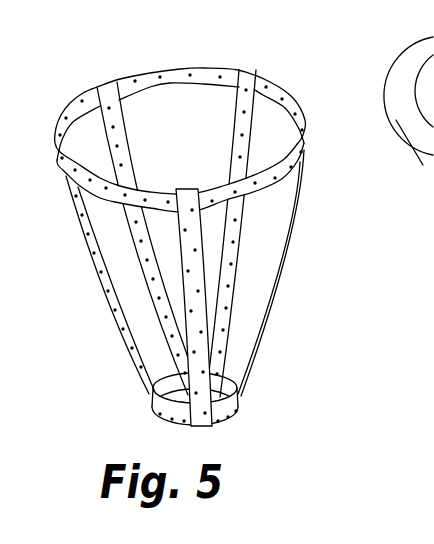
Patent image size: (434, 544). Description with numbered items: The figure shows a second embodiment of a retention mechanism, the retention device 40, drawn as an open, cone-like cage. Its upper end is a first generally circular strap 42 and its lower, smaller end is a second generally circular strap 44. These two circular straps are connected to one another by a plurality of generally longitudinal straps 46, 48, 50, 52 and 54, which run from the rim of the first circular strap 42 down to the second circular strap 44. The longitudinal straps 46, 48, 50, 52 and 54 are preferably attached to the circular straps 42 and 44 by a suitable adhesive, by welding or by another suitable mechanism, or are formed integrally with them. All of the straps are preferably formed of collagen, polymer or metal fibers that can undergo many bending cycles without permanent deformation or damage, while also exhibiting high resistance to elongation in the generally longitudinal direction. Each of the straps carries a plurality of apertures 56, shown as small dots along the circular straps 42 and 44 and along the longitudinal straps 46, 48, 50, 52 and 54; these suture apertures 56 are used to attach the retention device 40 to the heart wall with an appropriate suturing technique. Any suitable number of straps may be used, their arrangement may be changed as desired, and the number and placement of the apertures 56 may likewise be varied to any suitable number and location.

The retention device 40 is at (204, 232).
The first generally circular strap 42 is at (282, 94).
The second generally circular strap 44 is at (223, 422).
The longitudinal strap 46 is at (288, 259).
The longitudinal strap 48 is at (245, 82).
The longitudinal strap 50 is at (108, 86).
The longitudinal strap 52 is at (86, 233).
The longitudinal strap 54 is at (200, 345).
The apertures 56 is at (284, 190).